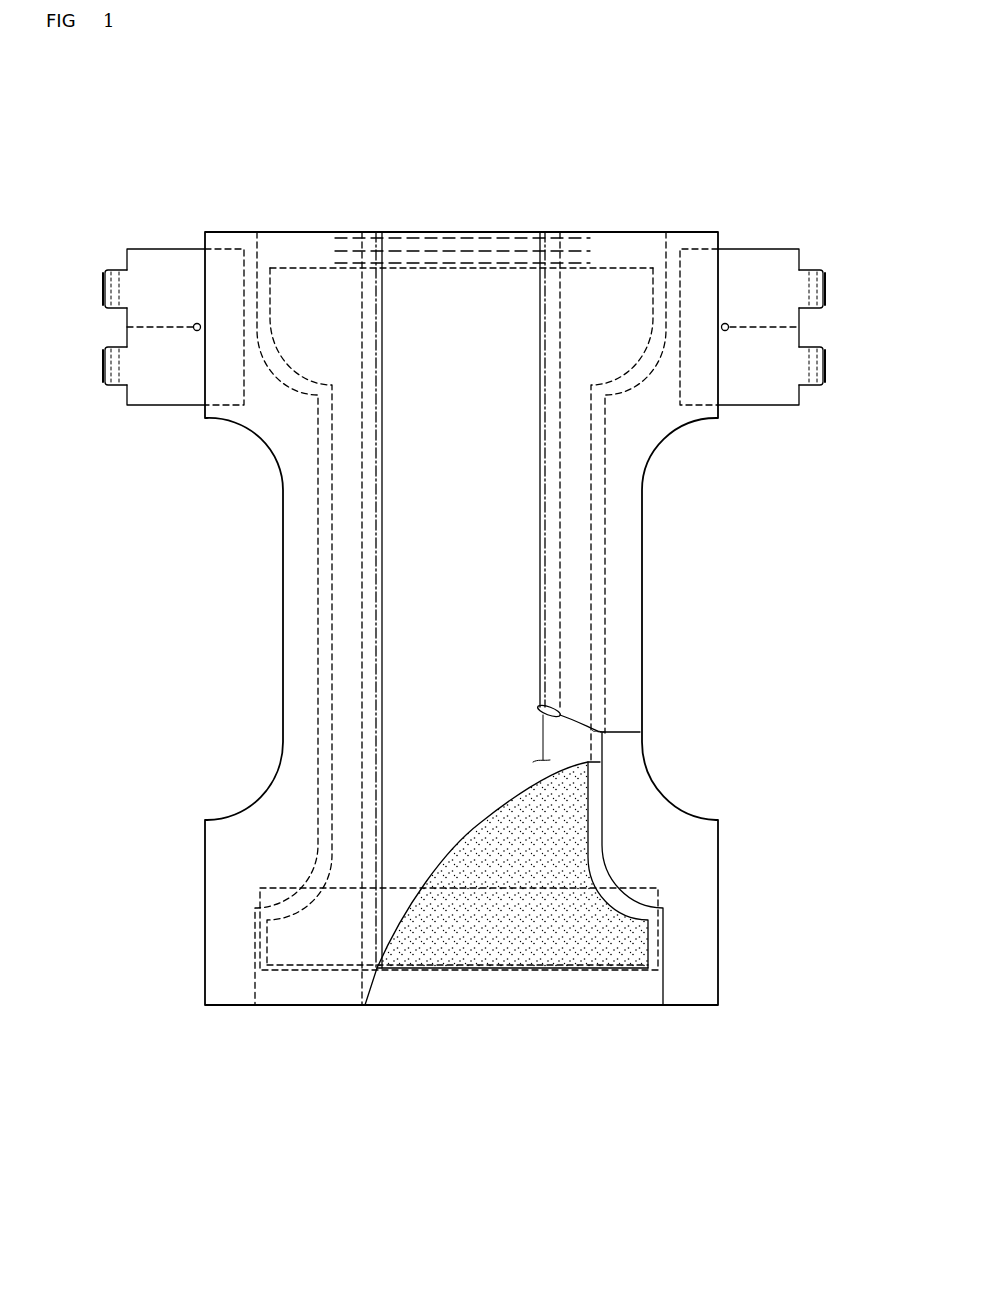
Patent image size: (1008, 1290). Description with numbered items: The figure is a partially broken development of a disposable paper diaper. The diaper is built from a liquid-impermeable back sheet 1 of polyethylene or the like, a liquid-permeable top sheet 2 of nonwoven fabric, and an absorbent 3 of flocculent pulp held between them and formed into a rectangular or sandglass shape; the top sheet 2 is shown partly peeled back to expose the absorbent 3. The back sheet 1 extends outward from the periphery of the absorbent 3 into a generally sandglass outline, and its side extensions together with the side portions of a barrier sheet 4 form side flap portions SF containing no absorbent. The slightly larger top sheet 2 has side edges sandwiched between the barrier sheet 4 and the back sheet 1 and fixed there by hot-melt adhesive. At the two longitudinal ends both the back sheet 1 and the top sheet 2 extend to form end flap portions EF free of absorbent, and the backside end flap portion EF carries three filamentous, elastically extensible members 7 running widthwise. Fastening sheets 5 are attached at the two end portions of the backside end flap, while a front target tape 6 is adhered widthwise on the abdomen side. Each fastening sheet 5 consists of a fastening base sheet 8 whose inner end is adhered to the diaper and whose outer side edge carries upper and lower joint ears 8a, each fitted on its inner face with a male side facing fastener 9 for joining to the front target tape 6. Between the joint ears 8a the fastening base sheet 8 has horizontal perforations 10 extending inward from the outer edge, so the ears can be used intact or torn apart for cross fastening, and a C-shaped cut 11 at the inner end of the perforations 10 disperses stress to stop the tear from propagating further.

The liquid-impermeable back sheet 1 is at (683, 1002).
The liquid-permeable top sheet 2 is at (513, 563).
The absorbent 3 is at (528, 952).
The barrier sheet 4 is at (630, 650).
The fastening sheet 5 is at (466, 305).
The front target tape 6 is at (295, 970).
The filamentous elastically extensible member 7 is at (470, 238).
The fastening base sheet 8 is at (190, 250).
The joint ear 8a is at (103, 285).
The male side facing fastener 9 is at (110, 268).
The perforations 10 is at (158, 329).
The C-shaped cut 11 is at (194, 322).
The side flap portion SF is at (304, 657).
The end flap portion EF is at (497, 248).